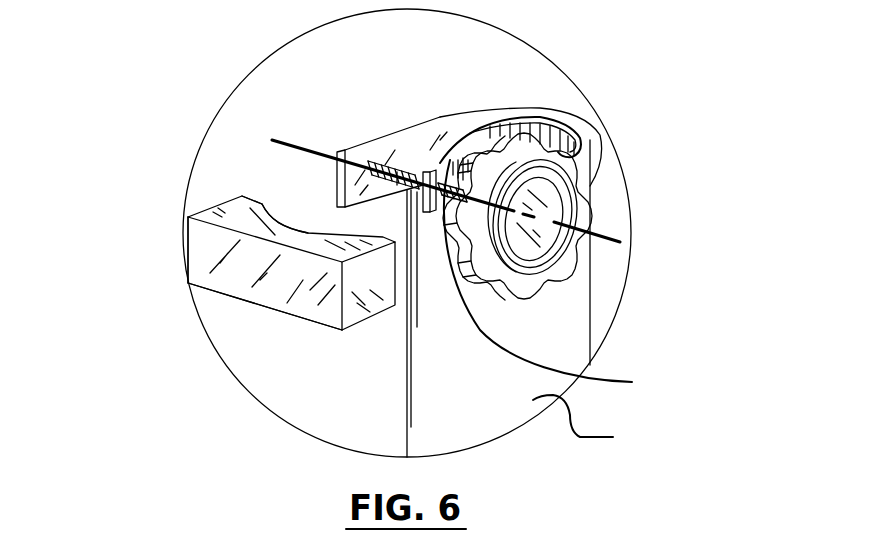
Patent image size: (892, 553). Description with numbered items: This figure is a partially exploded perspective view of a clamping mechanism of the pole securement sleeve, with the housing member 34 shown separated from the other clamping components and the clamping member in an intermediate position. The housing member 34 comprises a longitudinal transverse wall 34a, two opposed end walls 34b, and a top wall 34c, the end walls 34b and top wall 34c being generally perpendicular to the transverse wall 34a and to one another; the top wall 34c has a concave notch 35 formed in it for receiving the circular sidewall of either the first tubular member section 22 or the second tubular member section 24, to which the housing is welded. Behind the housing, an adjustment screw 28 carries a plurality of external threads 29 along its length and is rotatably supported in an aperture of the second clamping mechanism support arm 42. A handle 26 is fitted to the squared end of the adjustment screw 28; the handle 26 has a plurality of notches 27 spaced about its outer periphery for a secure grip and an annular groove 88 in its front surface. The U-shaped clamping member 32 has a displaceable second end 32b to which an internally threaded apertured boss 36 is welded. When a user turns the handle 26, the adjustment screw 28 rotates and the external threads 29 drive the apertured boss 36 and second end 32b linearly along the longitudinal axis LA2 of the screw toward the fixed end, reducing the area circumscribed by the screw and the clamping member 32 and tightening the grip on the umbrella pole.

The first tubular member section 22 is at (607, 422).
The second tubular member section 24 is at (407, 233).
The handle 26 is at (548, 233).
The notches 27 is at (587, 187).
The adjustment screw 28 is at (554, 279).
The external threads 29 is at (397, 185).
The U-shaped clamping member 32 is at (473, 150).
The second end of the U-shaped clamping member 32b is at (420, 198).
The housing member 34 is at (250, 277).
The longitudinal transverse wall 34a is at (331, 310).
The end walls 34b is at (188, 242).
The top wall 34c is at (232, 222).
The concave notch 35 is at (288, 220).
The apertured boss 36 is at (422, 172).
The second clamping mechanism support arm 42 is at (347, 152).
The annular groove 88 is at (537, 268).
The longitudinal axis of the adjustment screw LA2 is at (553, 218).